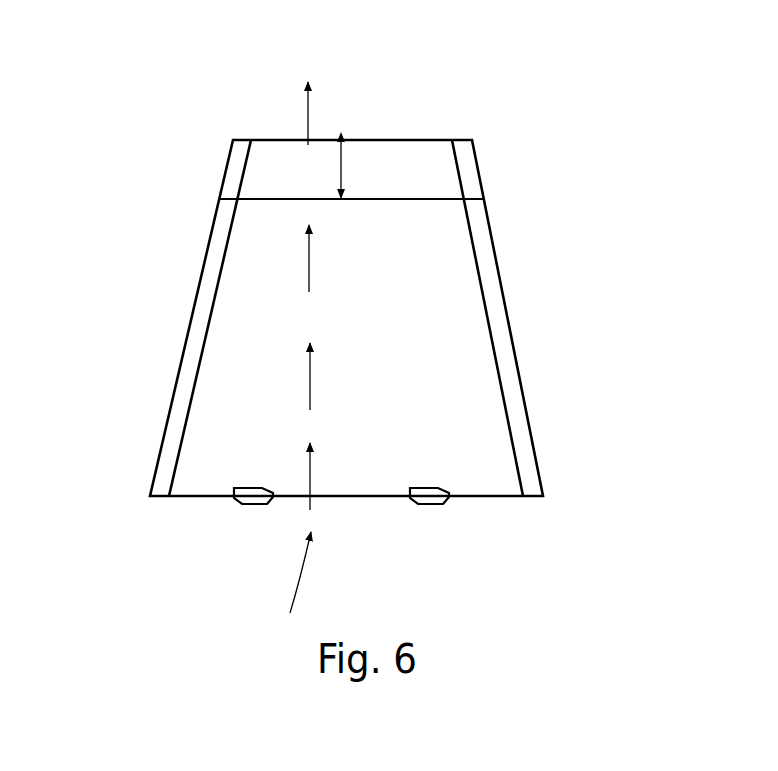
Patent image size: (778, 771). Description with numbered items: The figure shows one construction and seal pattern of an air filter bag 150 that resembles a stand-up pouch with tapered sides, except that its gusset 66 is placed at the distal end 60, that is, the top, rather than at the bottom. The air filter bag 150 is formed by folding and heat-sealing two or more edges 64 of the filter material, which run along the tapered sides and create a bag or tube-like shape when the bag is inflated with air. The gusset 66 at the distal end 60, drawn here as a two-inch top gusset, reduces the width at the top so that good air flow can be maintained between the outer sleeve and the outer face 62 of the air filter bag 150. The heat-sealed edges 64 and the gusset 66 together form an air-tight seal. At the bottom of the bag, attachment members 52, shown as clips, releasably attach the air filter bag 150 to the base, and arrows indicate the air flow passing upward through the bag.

The distal end 60 is at (373, 122).
The outer face 62 is at (420, 272).
The edges 64 is at (197, 322).
The gusset 66 is at (443, 173).
The attachment member 52 is at (233, 500).
The air filter bag 150 is at (163, 248).